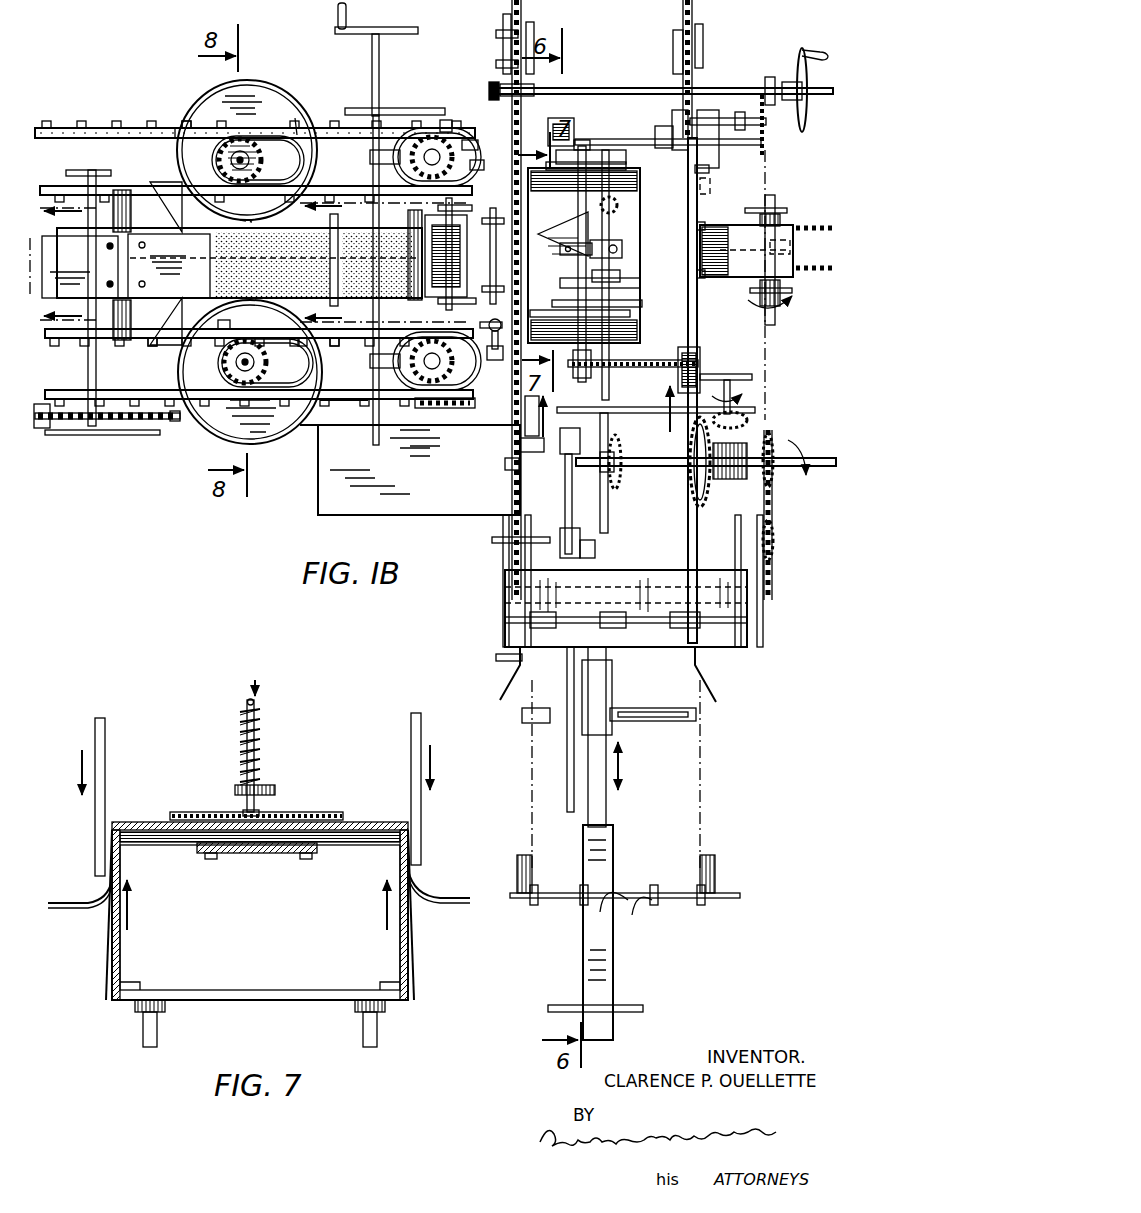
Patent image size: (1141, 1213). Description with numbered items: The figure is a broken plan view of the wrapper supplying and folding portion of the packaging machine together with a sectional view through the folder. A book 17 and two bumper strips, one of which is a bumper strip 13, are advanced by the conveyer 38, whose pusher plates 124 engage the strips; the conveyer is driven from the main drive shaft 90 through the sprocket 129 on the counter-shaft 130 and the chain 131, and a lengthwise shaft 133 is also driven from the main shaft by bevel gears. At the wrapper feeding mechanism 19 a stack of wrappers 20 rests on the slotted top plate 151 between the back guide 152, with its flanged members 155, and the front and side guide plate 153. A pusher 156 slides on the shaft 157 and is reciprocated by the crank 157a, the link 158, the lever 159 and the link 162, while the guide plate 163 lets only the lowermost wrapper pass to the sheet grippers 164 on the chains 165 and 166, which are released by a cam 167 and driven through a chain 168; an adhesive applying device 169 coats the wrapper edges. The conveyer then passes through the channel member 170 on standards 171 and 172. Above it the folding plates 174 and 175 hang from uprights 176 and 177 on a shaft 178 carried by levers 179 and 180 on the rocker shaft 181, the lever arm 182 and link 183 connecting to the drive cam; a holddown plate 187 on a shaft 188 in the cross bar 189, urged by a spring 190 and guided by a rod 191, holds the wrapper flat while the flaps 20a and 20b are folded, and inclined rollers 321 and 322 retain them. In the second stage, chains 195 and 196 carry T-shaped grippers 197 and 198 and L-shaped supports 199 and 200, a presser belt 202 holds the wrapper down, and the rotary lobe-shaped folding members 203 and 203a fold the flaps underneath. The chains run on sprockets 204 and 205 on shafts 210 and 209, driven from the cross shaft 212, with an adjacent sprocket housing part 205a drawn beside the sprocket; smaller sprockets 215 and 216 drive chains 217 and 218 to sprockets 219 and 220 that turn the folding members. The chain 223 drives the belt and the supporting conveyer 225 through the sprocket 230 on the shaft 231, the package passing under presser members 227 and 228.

In FIG. 1B, the bumper strip 13 is at (715, 178).
In FIG. 1B, the book 17 is at (652, 366).
In FIG. 7, the book 17 is at (354, 830).
In FIG. 1B, the wrapper feeding mechanism 19 is at (470, 548).
In FIG. 1B, the wrapper 20 is at (240, 219).
In FIG. 7, the wrapper 20 is at (395, 828).
In FIG. 7, the lateral edge portion of wrapper 20a is at (110, 970).
In FIG. 7, the lateral edge portion of wrapper 20b is at (418, 968).
In FIG. 1B, the conveyer 38 is at (792, 247).
In FIG. 7, the conveyer 38 is at (258, 854).
In FIG. 1B, the main drive shaft 90 is at (727, 374).
In FIG. 1B, the pusher plate 124 is at (716, 226).
In FIG. 1B, the sprocket 129 is at (782, 226).
In FIG. 1B, the counter-shaft 130 is at (773, 306).
In FIG. 1B, the chain 131 is at (432, 450).
In FIG. 1B, the lengthwise extending shaft 133 is at (816, 470).
In FIG. 1B, the slotted top plate 151 is at (607, 872).
In FIG. 1B, the back bar or guide 152 is at (732, 894).
In FIG. 1B, the front and side guide plate 153 is at (500, 696).
In FIG. 1B, the flanged member 155 is at (633, 914).
In FIG. 1B, the pusher 156 is at (618, 706).
In FIG. 1B, the shaft 157 is at (607, 806).
In FIG. 1B, the crank 157a is at (560, 440).
In FIG. 1B, the link 158 is at (568, 505).
In FIG. 1B, the lever 159 is at (586, 556).
In FIG. 1B, the link 162 is at (568, 814).
In FIG. 1B, the guide plate 163 is at (668, 646).
In FIG. 1B, the sheet gripper 164 is at (503, 413).
In FIG. 1B, the chain 165 is at (519, 64).
In FIG. 1B, the chain 166 is at (688, 76).
In FIG. 1B, the release cam 167 is at (553, 122).
In FIG. 1B, the chain 168 is at (776, 597).
In FIG. 1B, the adhesive applying device 169 is at (326, 490).
In FIG. 1B, the channel-like member 170 is at (630, 192).
In FIG. 7, the channel-like member 170 is at (278, 1004).
In FIG. 1B, the standard 171 is at (630, 130).
In FIG. 1B, the standard 172 is at (656, 396).
In FIG. 1B, the folding plate 174 is at (626, 168).
In FIG. 7, the folding plate 174 is at (88, 898).
In FIG. 1B, the folding plate 175 is at (610, 328).
In FIG. 7, the folding plate 175 is at (436, 892).
In FIG. 1B, the upwardly extending arm 176 is at (586, 152).
In FIG. 7, the upwardly extending arm 176 is at (106, 756).
In FIG. 1B, the upwardly extending arm 177 is at (584, 382).
In FIG. 7, the upwardly extending arm 177 is at (412, 720).
In FIG. 1B, the shaft 178 is at (618, 208).
In FIG. 1B, the lever 179 is at (640, 146).
In FIG. 1B, the lever 180 is at (673, 375).
In FIG. 1B, the rocker shaft 181 is at (697, 330).
In FIG. 1B, the lever arm 182 is at (745, 168).
In FIG. 1B, the link 183 is at (748, 285).
In FIG. 1B, the holddown plate 187 is at (616, 288).
In FIG. 7, the holddown plate 187 is at (298, 814).
In FIG. 1B, the shaft 188 is at (624, 258).
In FIG. 7, the shaft 188 is at (258, 712).
In FIG. 1B, the cross block or bar 189 is at (622, 250).
In FIG. 7, the spring 190 is at (248, 706).
In FIG. 1B, the guide rod 191 is at (556, 246).
In FIG. 7, the guide rod 191 is at (259, 750).
In FIG. 1B, the chain 195 is at (105, 151).
In FIG. 1B, the chain 196 is at (334, 426).
In FIG. 1B, the T-shaped gripper member 197 is at (228, 325).
In FIG. 1B, the T-shaped gripper member 198 is at (184, 128).
In FIG. 1B, the L-shaped element 199 is at (302, 452).
In FIG. 1B, the L-shaped element 200 is at (299, 118).
In FIG. 1B, the presser belt 202 is at (239, 260).
In FIG. 1B, the rotary lobe-shaped folding member 203 is at (222, 432).
In FIG. 1B, the rotary lobe-shaped folding member 203a is at (296, 84).
In FIG. 1B, the sprocket 204 is at (355, 428).
In FIG. 1B, the sprocket 205 is at (412, 140).
In FIG. 1B, the gear housing 205a is at (448, 224).
In FIG. 1B, the shaft 209 is at (392, 128).
In FIG. 1B, the shaft 210 is at (492, 326).
In FIG. 1B, the cross shaft 212 is at (440, 120).
In FIG. 1B, the sprocket 215 is at (465, 140).
In FIG. 1B, the sprocket 216 is at (470, 364).
In FIG. 1B, the chain 217 is at (296, 160).
In FIG. 1B, the chain 218 is at (407, 361).
In FIG. 1B, the sprocket 219 is at (216, 162).
In FIG. 1B, the sprocket 220 is at (262, 363).
In FIG. 1B, the chain 223 is at (174, 423).
In FIG. 1B, the supporting conveyer 225 is at (128, 340).
In FIG. 1B, the spring-biased presser member 227 is at (169, 266).
In FIG. 1B, the spring-biased presser member 228 is at (74, 267).
In FIG. 1B, the sprocket 230 is at (92, 430).
In FIG. 1B, the supporting shaft 231 is at (96, 374).
In FIG. 1B, the inclined roller 321 is at (484, 332).
In FIG. 1B, the inclined roller 322 is at (480, 160).